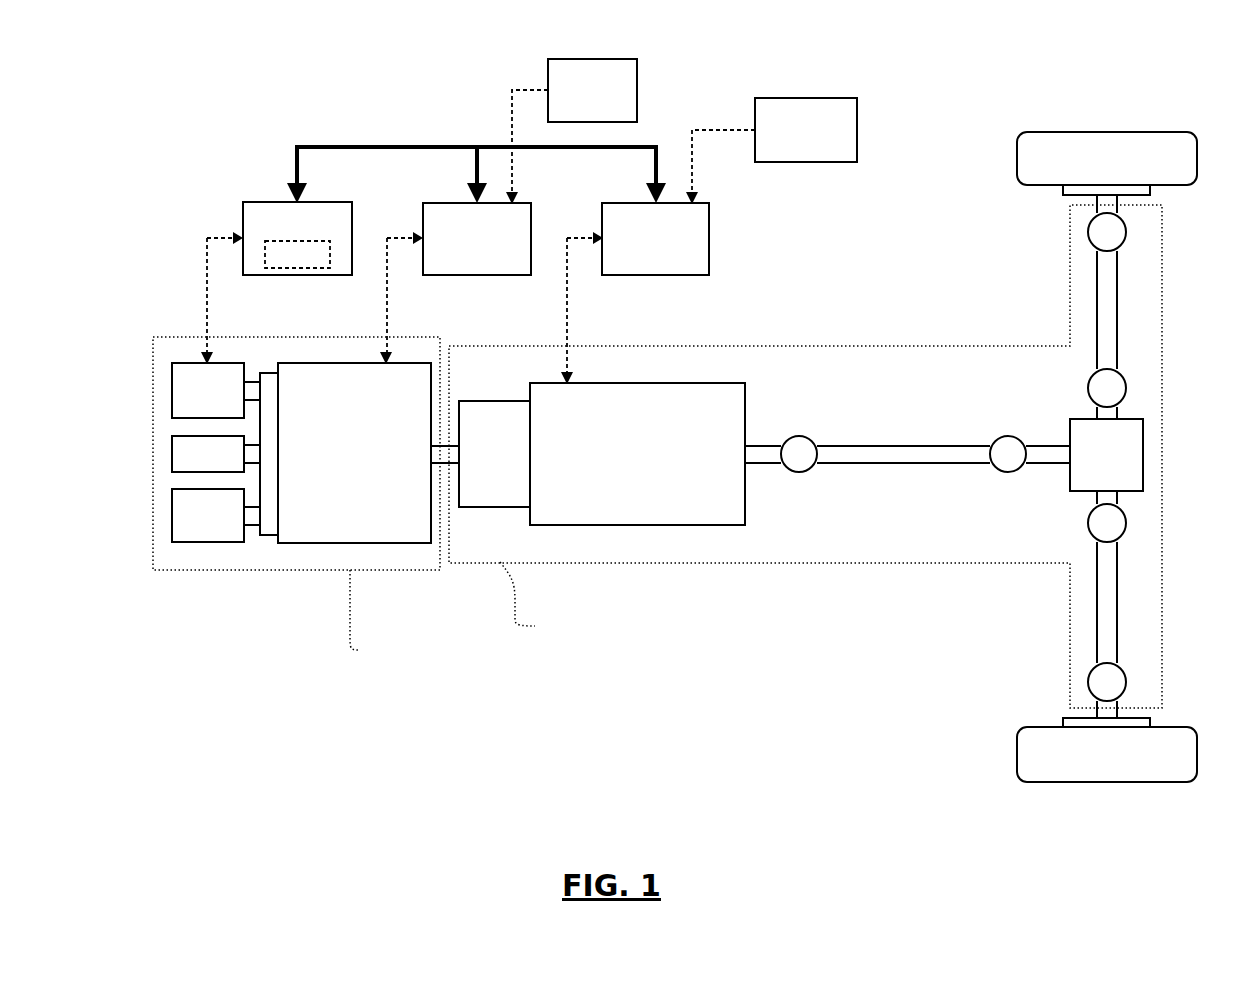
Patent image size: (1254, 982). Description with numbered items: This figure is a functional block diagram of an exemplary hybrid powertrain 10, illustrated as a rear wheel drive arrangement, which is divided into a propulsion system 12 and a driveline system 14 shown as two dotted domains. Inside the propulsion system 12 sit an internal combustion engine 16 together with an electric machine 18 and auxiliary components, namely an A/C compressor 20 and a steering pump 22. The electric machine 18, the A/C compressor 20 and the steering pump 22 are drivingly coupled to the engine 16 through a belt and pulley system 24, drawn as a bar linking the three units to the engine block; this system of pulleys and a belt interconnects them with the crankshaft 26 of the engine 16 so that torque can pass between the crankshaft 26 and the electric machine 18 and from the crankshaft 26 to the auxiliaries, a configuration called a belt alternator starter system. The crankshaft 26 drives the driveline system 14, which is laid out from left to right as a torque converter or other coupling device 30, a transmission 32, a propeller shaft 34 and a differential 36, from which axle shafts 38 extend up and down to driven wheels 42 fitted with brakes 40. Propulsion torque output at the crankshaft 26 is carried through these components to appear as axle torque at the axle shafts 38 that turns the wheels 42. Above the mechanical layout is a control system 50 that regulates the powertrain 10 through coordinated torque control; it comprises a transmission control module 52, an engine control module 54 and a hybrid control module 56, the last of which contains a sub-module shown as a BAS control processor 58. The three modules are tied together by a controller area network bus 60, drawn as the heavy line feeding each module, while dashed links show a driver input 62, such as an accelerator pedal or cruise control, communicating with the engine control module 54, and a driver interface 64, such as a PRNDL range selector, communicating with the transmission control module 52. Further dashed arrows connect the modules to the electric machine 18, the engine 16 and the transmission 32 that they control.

The hybrid powertrain 10 is at (88, 165).
The propulsion system 12 is at (170, 603).
The driveline system 14 is at (760, 613).
The internal combustion engine 16 is at (390, 543).
The electric machine 18 is at (172, 392).
The A/C compressor 20 is at (172, 515).
The steering pump 22 is at (172, 455).
The belt and pulley system 24 is at (253, 548).
The crankshaft 26 is at (432, 455).
The torque converter 30 is at (494, 401).
The transmission 32 is at (642, 383).
The propeller shaft 34 is at (865, 445).
The differential 36 is at (1143, 455).
The axle shafts 38 is at (1117, 310).
The brakes 40 is at (1160, 190).
The driven wheels 42 is at (1043, 190).
The control system 50 is at (262, 118).
The transmission control module 52 is at (709, 240).
The engine control module 54 is at (531, 235).
The hybrid control module 56 is at (243, 220).
The BAS control processor 58 is at (301, 269).
The controller area network bus 60 is at (379, 147).
The driver input 62 is at (596, 59).
The driver interface 64 is at (810, 98).